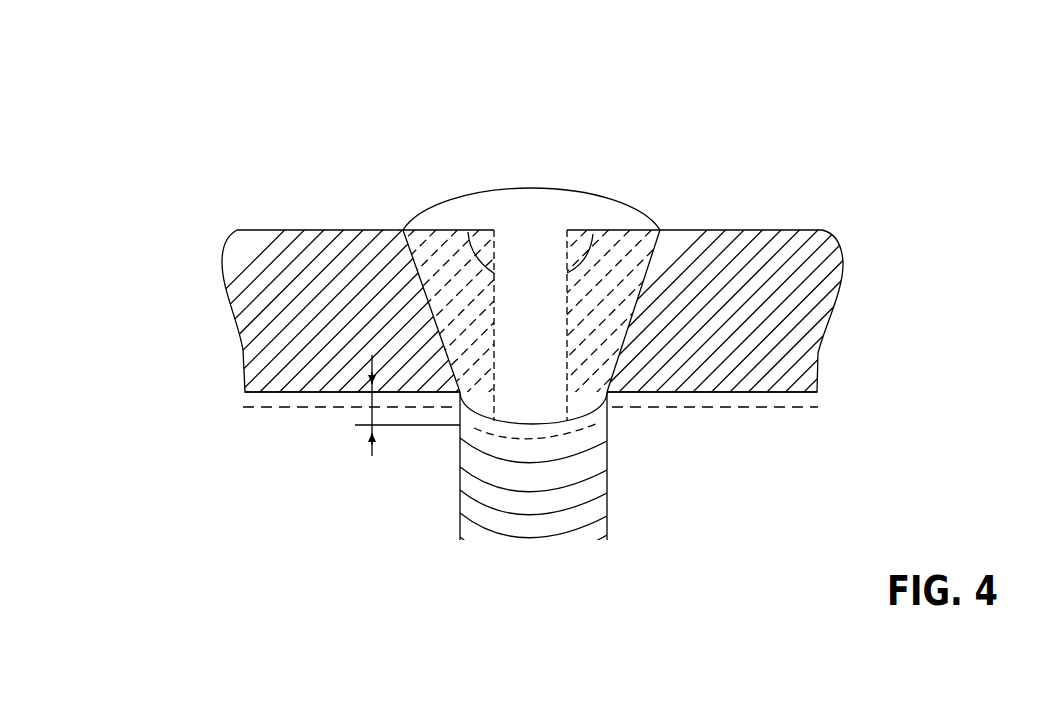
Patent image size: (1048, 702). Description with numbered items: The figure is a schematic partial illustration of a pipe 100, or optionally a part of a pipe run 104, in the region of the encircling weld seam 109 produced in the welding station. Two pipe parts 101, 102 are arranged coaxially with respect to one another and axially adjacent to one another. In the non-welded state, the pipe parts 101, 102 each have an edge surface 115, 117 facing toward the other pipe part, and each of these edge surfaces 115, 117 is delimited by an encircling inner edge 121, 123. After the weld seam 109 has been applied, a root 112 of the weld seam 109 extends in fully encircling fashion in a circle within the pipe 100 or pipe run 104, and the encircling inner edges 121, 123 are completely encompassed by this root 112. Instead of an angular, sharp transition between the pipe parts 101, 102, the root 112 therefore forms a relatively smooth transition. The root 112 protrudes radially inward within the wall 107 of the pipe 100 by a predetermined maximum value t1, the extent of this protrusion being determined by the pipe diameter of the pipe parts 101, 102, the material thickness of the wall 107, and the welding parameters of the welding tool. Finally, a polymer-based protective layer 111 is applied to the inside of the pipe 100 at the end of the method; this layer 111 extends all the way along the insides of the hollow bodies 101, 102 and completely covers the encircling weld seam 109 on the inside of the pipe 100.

The pipe 100 is at (345, 86).
The pipe run 104 is at (534, 364).
The pipe part 101 is at (757, 245).
The pipe part 102 is at (283, 245).
The wall 107 is at (720, 393).
The weld seam 109 is at (527, 188).
The polymer-based protective layer 111 is at (272, 408).
The root of the weld seam 112 is at (545, 431).
The edge surface 115 is at (593, 234).
The edge surface 117 is at (468, 232).
The encircling inner edge 121 is at (582, 389).
The encircling inner edge 123 is at (488, 386).
The predetermined maximum value t1 is at (371, 364).